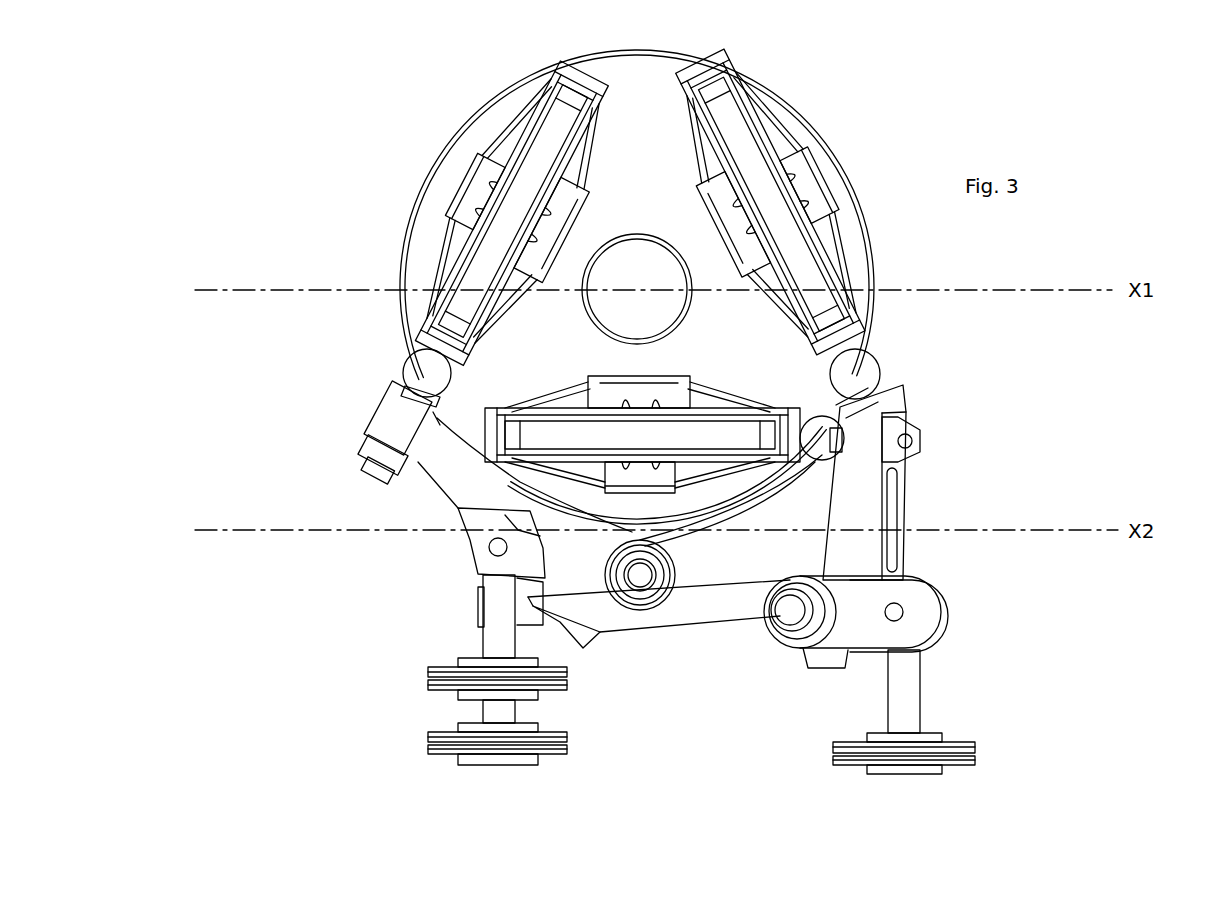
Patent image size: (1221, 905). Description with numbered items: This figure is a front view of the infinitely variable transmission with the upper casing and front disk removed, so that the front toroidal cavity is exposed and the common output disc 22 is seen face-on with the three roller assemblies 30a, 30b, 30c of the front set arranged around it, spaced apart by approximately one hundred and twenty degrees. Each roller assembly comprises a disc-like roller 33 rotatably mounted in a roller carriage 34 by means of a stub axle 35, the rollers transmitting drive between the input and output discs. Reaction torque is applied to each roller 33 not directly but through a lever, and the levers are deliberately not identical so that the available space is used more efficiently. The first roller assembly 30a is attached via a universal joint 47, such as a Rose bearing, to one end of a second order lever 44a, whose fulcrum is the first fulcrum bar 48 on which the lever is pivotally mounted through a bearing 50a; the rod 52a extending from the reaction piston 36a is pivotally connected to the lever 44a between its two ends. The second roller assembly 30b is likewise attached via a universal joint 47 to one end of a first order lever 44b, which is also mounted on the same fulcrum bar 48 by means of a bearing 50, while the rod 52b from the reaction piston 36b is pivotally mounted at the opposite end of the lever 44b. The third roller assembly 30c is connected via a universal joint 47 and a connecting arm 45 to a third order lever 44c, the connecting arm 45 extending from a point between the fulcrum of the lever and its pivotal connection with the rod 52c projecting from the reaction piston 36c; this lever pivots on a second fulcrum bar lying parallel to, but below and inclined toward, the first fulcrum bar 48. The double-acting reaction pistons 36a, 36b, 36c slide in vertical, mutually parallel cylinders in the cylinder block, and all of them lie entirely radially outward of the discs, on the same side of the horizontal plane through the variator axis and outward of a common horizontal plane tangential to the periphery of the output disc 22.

The output disc 22 is at (859, 186).
The first roller assembly 30a is at (532, 108).
The second roller assembly 30b is at (772, 125).
The third roller assembly 30c is at (552, 388).
The roller 33 is at (720, 435).
The roller carriage 34 is at (690, 412).
The stub axle 35 is at (640, 375).
The universal joint 47 is at (412, 374).
The second order lever 44a is at (465, 505).
The first order lever 44b is at (700, 598).
The third order lever 44c is at (896, 532).
The connecting arm 45 is at (895, 482).
The first fulcrum bar 48 is at (659, 631).
The bearing 50 is at (803, 614).
The bearing 50a is at (640, 585).
The rod 52a is at (500, 640).
The rod 52b is at (515, 712).
The rod 52c is at (925, 698).
The reaction piston 36a is at (440, 680).
The reaction piston 36b is at (438, 745).
The reaction piston 36c is at (962, 740).